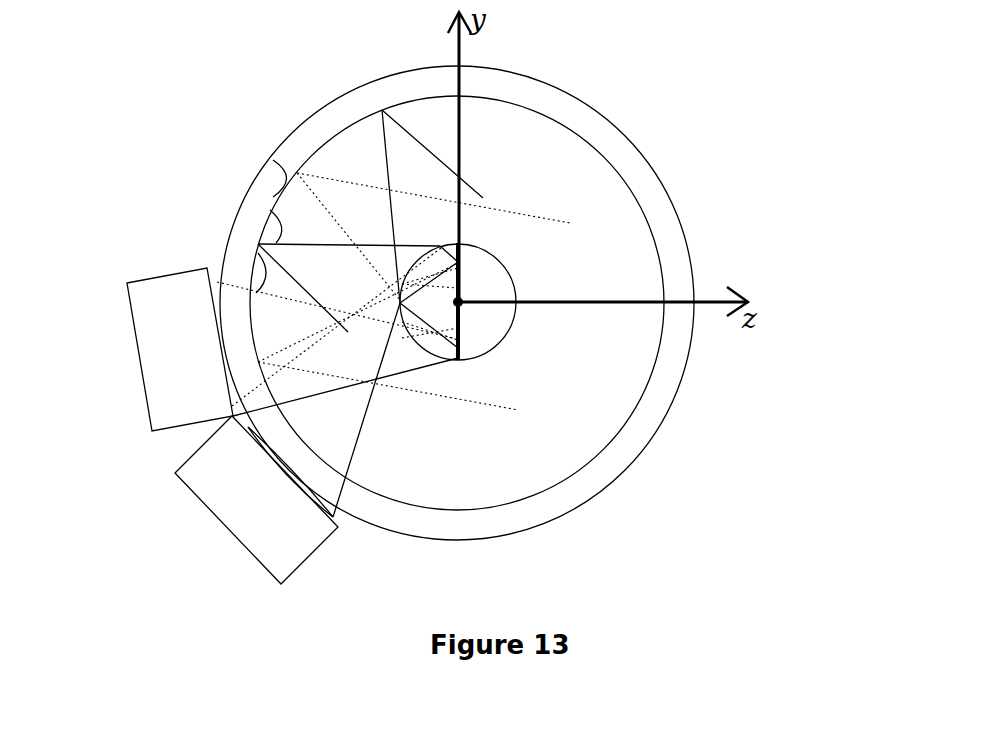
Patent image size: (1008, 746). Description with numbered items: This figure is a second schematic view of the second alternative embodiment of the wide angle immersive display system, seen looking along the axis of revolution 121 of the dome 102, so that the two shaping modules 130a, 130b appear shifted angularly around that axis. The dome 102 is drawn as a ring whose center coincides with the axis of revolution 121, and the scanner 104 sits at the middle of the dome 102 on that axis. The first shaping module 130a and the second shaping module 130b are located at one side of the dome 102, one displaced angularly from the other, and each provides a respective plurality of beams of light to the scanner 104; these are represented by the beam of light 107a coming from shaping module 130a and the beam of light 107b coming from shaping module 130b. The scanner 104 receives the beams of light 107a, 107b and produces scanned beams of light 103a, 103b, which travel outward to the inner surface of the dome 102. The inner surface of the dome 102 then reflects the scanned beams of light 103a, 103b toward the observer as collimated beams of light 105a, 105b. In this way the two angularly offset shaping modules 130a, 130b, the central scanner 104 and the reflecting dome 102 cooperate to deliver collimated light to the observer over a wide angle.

The dome 102 is at (690, 260).
The scanner 104 is at (490, 278).
The axis of revolution 121 is at (470, 309).
The scanned beam of light 103a is at (273, 196).
The scanned beam of light 103b is at (314, 178).
The collimated beam of light 105a is at (400, 163).
The collimated beam of light 105b is at (325, 176).
The beam of light 107a is at (360, 428).
The beam of light 107b is at (258, 243).
The shaping module 130a is at (176, 472).
The shaping module 130b is at (150, 281).